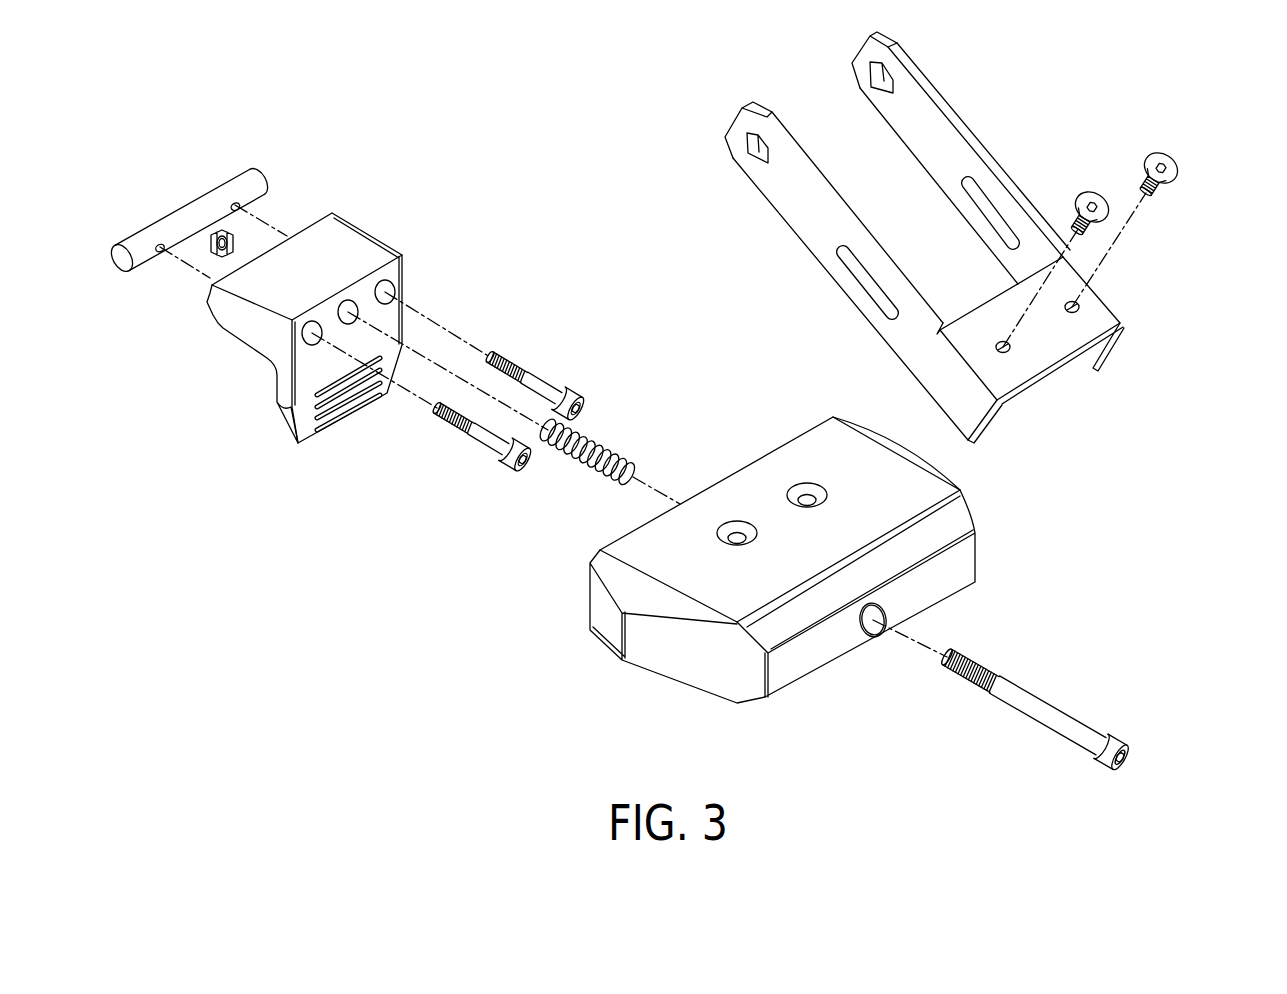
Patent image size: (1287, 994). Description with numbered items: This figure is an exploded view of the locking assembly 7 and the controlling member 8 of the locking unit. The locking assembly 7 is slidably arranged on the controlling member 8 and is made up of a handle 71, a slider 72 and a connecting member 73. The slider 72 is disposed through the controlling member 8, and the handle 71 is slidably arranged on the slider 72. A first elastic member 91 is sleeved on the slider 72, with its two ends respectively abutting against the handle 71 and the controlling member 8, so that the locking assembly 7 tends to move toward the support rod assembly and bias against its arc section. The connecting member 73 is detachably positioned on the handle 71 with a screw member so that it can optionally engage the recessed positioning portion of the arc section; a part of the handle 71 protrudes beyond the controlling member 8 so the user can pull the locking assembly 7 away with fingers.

The locking assembly 7 is at (619, 441).
The handle 71 is at (247, 327).
The slider 72 is at (1036, 706).
The connecting member 73 is at (194, 211).
The controlling member 8 is at (1192, 346).
The first elastic member 91 is at (606, 446).